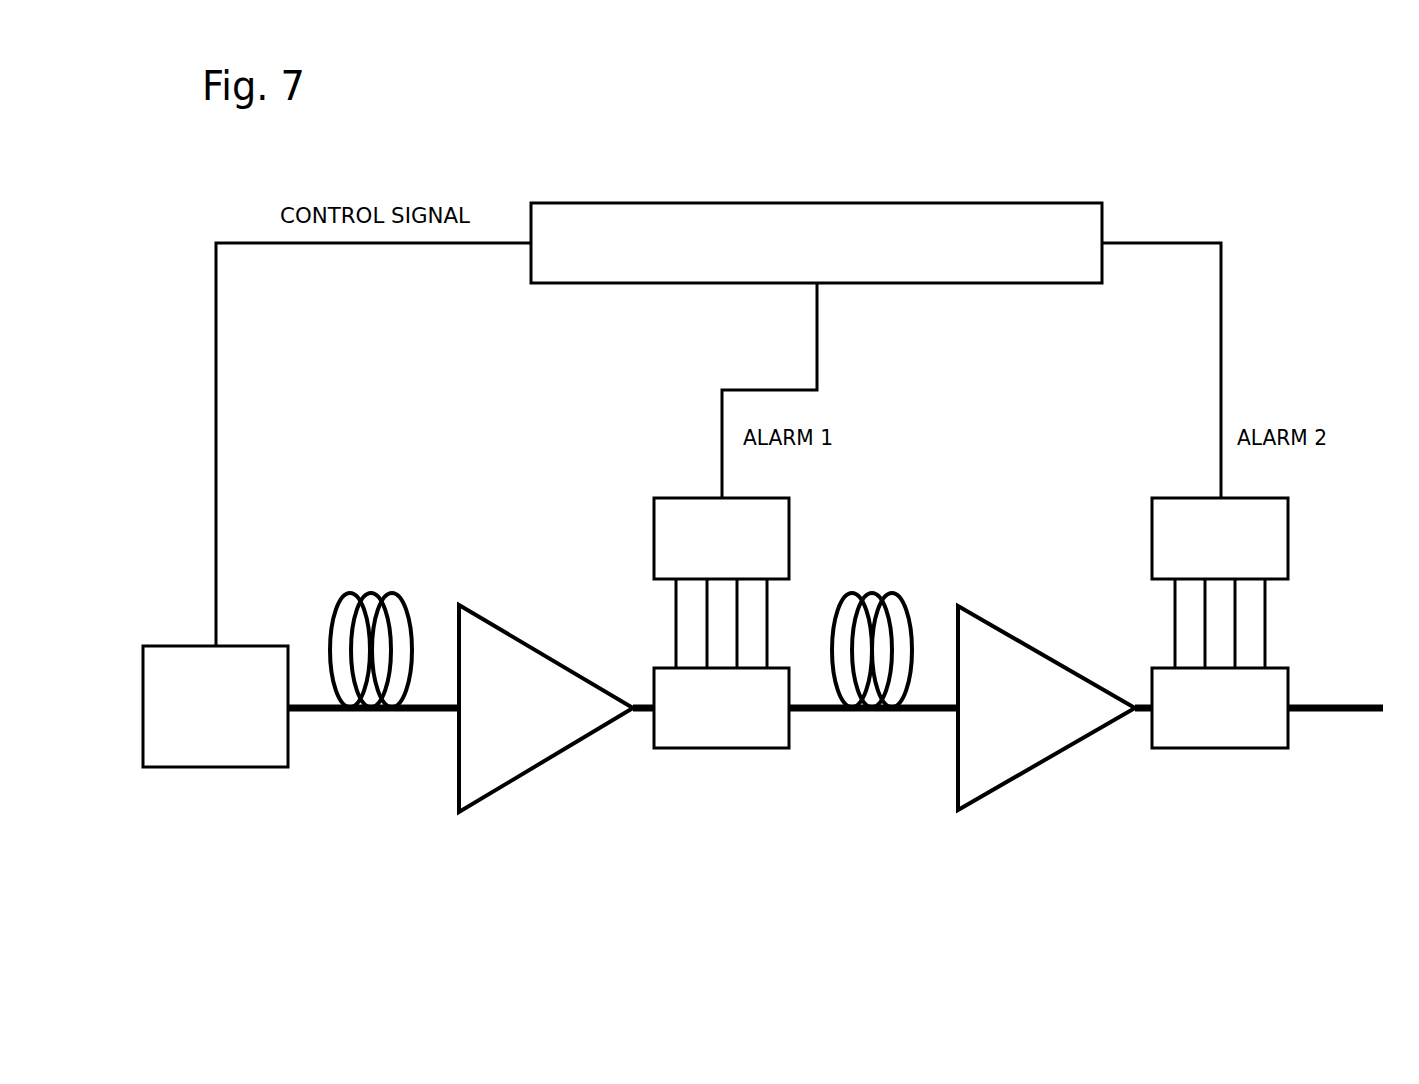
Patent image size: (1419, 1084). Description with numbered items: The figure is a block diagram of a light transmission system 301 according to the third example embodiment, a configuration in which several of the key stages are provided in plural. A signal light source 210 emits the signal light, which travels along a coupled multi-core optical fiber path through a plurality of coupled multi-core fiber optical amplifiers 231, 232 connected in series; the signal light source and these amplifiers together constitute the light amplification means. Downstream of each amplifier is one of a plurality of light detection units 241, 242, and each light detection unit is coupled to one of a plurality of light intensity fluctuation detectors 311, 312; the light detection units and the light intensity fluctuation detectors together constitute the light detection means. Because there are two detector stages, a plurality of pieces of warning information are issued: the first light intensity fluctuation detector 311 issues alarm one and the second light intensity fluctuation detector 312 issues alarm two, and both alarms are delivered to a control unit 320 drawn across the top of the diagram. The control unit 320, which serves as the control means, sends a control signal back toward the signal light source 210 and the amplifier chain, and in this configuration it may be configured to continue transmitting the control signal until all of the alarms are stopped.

The light transmission system 301 is at (903, 128).
The control unit 320 is at (655, 202).
The signal light source 210 is at (256, 646).
The coupled multi-core fiber optical amplifier 231 is at (518, 640).
The coupled multi-core fiber optical amplifier 232 is at (1023, 643).
The light detection unit 241 is at (725, 750).
The light detection unit 242 is at (1228, 750).
The light intensity fluctuation detector 311 is at (789, 540).
The light intensity fluctuation detector 312 is at (1288, 540).